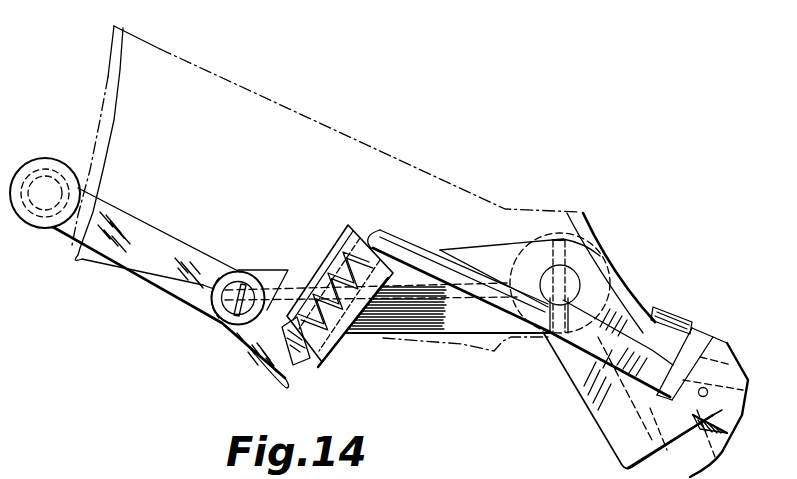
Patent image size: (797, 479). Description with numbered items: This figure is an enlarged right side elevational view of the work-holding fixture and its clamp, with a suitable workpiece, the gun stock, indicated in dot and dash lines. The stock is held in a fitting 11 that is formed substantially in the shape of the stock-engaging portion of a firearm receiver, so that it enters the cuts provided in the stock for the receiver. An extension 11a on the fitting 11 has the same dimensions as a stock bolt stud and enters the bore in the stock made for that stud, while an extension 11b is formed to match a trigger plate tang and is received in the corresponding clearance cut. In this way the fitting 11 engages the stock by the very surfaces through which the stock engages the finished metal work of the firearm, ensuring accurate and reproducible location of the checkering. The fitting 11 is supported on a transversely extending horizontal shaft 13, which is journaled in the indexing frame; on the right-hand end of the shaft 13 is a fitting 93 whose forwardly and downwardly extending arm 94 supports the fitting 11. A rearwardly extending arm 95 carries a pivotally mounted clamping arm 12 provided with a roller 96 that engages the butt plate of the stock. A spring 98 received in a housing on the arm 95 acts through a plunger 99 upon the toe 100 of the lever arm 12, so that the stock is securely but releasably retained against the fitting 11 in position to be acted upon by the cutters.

The fitting 11 is at (725, 343).
The extension 11a is at (387, 233).
The extension 11b is at (667, 312).
The clamp 12 is at (177, 292).
The shaft 13 is at (597, 278).
The fitting 93 is at (573, 258).
The arm 94 is at (610, 432).
The rearwardly extending arm 95 is at (387, 334).
The roller 96 is at (38, 222).
The spring 98 is at (320, 357).
The plunger 99 is at (299, 362).
The toe 100 is at (270, 366).